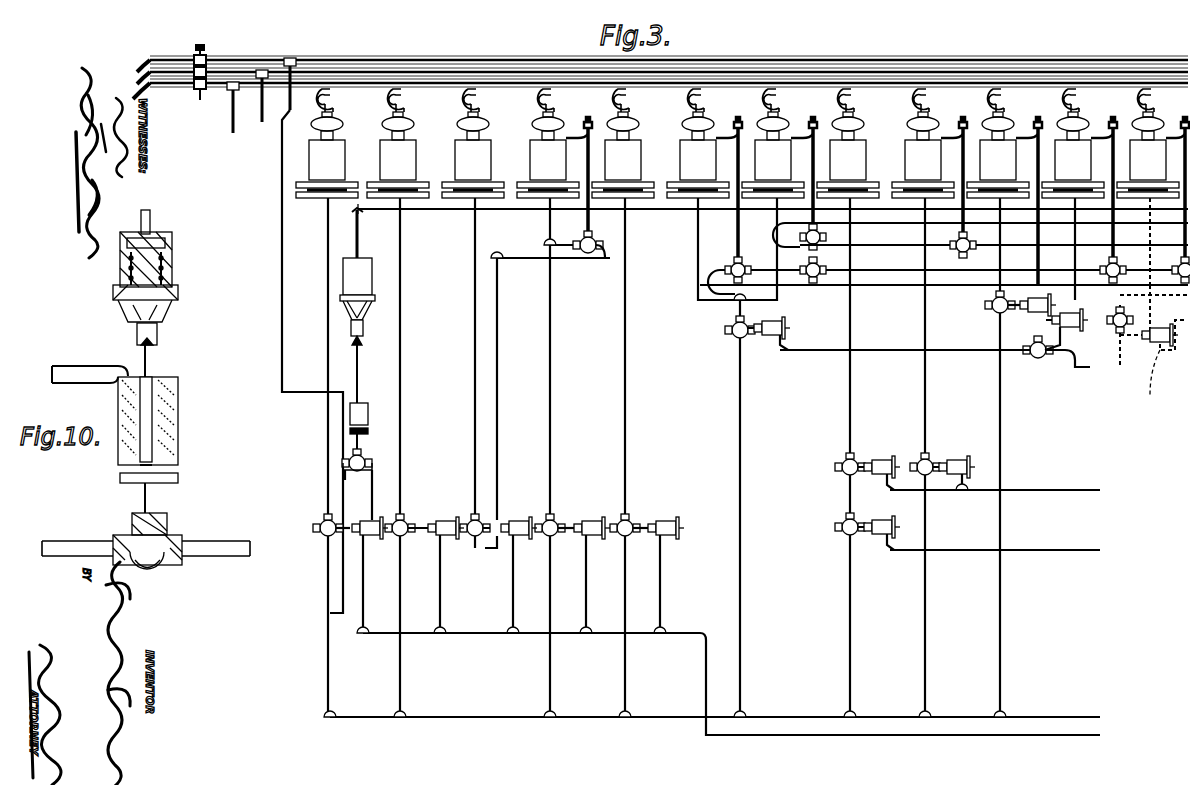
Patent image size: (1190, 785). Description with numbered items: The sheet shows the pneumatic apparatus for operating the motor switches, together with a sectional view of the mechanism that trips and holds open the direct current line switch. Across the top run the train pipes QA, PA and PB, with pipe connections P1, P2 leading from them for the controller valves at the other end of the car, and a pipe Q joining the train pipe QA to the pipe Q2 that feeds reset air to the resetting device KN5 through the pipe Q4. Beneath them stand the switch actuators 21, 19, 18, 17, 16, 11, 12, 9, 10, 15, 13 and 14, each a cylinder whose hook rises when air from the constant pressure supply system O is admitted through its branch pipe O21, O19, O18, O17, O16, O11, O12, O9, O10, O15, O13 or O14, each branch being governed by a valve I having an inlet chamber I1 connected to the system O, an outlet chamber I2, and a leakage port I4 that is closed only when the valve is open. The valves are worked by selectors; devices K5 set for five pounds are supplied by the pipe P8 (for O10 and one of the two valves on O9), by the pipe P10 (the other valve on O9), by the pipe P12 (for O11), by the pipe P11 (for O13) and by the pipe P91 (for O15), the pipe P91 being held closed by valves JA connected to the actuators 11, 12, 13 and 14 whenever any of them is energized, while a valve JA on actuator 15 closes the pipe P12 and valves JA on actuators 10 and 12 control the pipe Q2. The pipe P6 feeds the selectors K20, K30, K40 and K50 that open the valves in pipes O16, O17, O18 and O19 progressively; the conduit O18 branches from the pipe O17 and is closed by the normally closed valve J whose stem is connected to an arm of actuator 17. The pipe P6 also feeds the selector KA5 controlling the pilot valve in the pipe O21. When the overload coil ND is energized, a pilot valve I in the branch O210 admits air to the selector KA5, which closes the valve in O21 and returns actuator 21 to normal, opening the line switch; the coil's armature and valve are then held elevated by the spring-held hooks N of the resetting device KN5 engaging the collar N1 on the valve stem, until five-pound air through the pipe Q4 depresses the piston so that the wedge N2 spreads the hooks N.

In FIG. 3, the train pipe QA is at (390, 62).
In FIG. 3, the train pipe PA is at (445, 72).
In FIG. 3, the train pipe PB is at (505, 84).
In FIG. 3, the pipe P1 is at (264, 124).
In FIG. 3, the pipe P2 is at (232, 113).
In FIG. 3, the pipe Q is at (265, 138).
In FIG. 3, the pipe Q2 is at (880, 225).
In FIG. 3, the pipe Q4 is at (360, 238).
In FIG. 10, the pipe Q4 is at (152, 216).
In FIG. 3, the switch actuator 21 is at (327, 143).
In FIG. 3, the switch actuator 19 is at (398, 143).
In FIG. 3, the switch actuator 18 is at (473, 143).
In FIG. 3, the switch actuator 17 is at (548, 143).
In FIG. 3, the switch actuator 16 is at (623, 143).
In FIG. 3, the switch actuator 11 is at (698, 143).
In FIG. 3, the switch actuator 12 is at (773, 143).
In FIG. 3, the switch actuator 9 is at (848, 143).
In FIG. 3, the switch actuator 10 is at (923, 143).
In FIG. 3, the switch actuator 15 is at (998, 143).
In FIG. 3, the switch actuator 13 is at (1073, 143).
In FIG. 3, the switch actuator 14 is at (1148, 143).
In FIG. 3, the resetting device KN5 is at (365, 272).
In FIG. 10, the resetting device KN5 is at (172, 262).
In FIG. 3, the hooks N is at (365, 344).
In FIG. 10, the hooks N is at (160, 333).
In FIG. 10, the collar N1 is at (152, 347).
In FIG. 10, the wedge N2 is at (135, 312).
In FIG. 3, the overload coil ND is at (364, 414).
In FIG. 10, the overload coil ND is at (178, 420).
In FIG. 3, the valve I is at (368, 458).
In FIG. 10, the valve I is at (160, 562).
In FIG. 10, the inlet chamber I1 is at (148, 568).
In FIG. 10, the outlet chamber I2 is at (182, 560).
In FIG. 10, the leakage port I4 is at (167, 522).
In FIG. 3, the constant air pressure supply system O is at (492, 718).
In FIG. 3, the branch pipe O9 is at (852, 614).
In FIG. 3, the branch pipe O10 is at (927, 605).
In FIG. 3, the branch pipe O11 is at (698, 224).
In FIG. 3, the pipe O12 is at (775, 242).
In FIG. 3, the supply branch O13 is at (855, 236).
In FIG. 3, the pipe O14 is at (1147, 281).
In FIG. 3, the branch pipe O15 is at (1002, 605).
In FIG. 3, the branch pipe O16 is at (628, 672).
In FIG. 3, the branch pipe O17 is at (552, 672).
In FIG. 3, the air supply conduit O18 is at (473, 400).
In FIG. 3, the branch pipe O19 is at (398, 665).
In FIG. 3, the branch pipe O21 is at (330, 648).
In FIG. 3, the branch pipe O210 is at (343, 505).
In FIG. 10, the branch pipe O210 is at (72, 540).
In FIG. 3, the outlet pipe P6 is at (1040, 737).
In FIG. 3, the branch pipe P8 is at (1062, 490).
In FIG. 3, the outlet pipe P10 is at (1072, 550).
In FIG. 3, the outlet pipe P11 is at (1154, 379).
In FIG. 3, the outlet pipe P12 is at (965, 352).
In FIG. 3, the pipe P91 is at (900, 286).
In FIG. 3, the valve J is at (593, 240).
In FIG. 3, the valve JA is at (722, 268).
In FIG. 3, the pneumatic valve actuator K5 is at (780, 322).
In FIG. 3, the selector KA5 is at (380, 538).
In FIG. 3, the selective valve actuator K20 is at (664, 538).
In FIG. 3, the selective valve actuator K30 is at (588, 538).
In FIG. 3, the selective valve actuator K40 is at (516, 538).
In FIG. 3, the selective valve actuator K50 is at (512, 537).